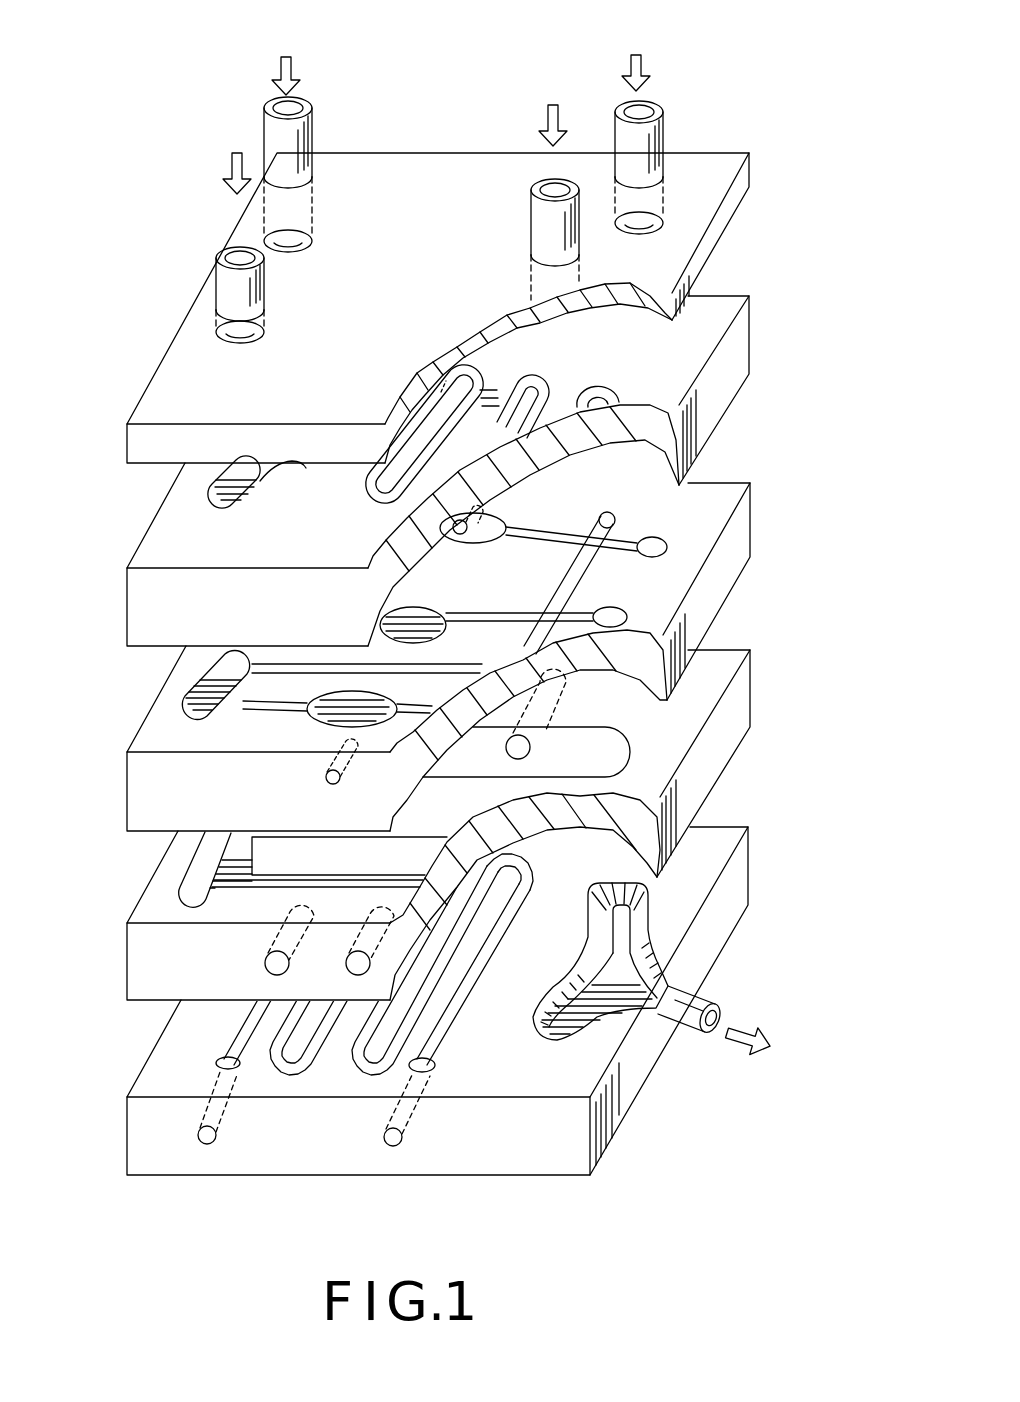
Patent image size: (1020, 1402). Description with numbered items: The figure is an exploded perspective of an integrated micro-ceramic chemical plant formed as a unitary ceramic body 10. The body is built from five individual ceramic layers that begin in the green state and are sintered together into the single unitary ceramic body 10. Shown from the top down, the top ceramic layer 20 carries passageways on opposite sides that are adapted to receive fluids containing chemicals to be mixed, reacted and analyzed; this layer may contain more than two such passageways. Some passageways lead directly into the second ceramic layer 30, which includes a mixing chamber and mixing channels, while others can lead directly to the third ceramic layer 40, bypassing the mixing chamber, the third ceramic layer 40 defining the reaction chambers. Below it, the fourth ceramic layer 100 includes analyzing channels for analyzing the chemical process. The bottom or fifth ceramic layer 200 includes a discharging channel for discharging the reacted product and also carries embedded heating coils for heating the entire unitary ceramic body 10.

The unitary ceramic body 10 is at (104, 44).
The top ceramic layer 20 is at (736, 253).
The second ceramic layer 30 is at (748, 435).
The third ceramic layer 40 is at (743, 613).
The fourth ceramic layer 100 is at (760, 747).
The fifth ceramic layer 200 is at (712, 938).